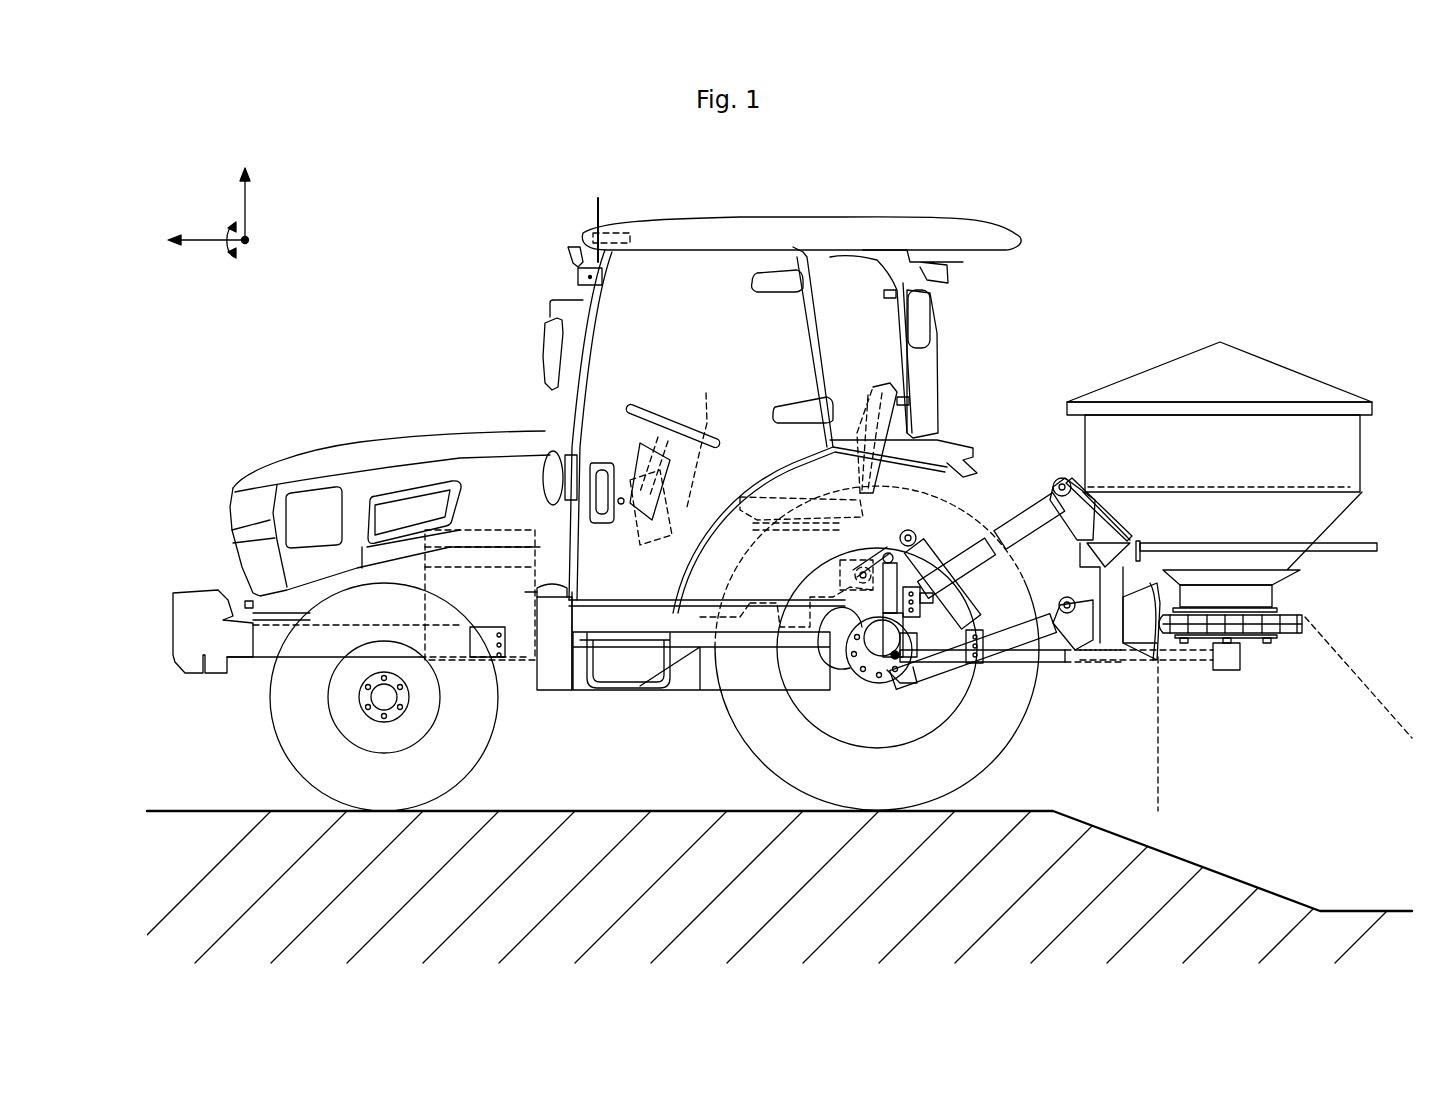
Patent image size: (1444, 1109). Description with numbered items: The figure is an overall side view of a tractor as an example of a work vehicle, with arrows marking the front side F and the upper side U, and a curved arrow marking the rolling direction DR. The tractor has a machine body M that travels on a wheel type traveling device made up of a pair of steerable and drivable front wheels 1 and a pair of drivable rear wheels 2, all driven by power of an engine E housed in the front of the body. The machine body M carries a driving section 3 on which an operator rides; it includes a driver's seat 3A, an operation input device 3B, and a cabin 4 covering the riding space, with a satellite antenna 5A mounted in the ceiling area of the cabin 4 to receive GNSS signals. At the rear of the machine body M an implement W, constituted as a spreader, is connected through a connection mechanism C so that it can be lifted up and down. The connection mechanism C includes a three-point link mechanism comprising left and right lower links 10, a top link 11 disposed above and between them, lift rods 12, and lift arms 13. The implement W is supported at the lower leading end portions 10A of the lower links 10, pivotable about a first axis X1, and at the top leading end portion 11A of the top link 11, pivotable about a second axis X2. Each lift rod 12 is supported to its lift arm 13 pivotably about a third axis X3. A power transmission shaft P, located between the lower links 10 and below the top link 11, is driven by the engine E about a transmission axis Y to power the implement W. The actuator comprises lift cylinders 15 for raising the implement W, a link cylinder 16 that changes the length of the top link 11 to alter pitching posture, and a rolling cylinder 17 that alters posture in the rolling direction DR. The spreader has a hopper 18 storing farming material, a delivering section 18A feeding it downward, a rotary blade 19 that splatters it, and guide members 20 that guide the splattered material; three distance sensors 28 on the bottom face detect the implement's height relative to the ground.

The front wheels 1 is at (280, 730).
The rear wheels 2 is at (742, 727).
The driving section 3 is at (889, 196).
The driver's seat 3A is at (880, 388).
The operation input device 3B is at (657, 410).
The cabin 4 is at (935, 352).
The satellite antenna 5A is at (592, 212).
The lower links 10 is at (940, 663).
The lower leading end portions 10A is at (1087, 632).
The top link 11 is at (1016, 511).
The top leading end portion 11A is at (1093, 505).
The lift rods 12 is at (897, 553).
The lift arms 13 is at (887, 548).
The lift cylinders 15 is at (855, 677).
The link cylinder 16 is at (975, 550).
The rolling cylinder 17 is at (918, 548).
The hopper 18 is at (1358, 455).
The delivering section 18A is at (1232, 590).
The rotary blade 19 is at (1283, 636).
The guide members 20 is at (1145, 657).
The distance sensors 28 is at (1267, 644).
The machine body M is at (376, 390).
The engine E is at (527, 523).
The implement W is at (1292, 318).
The connection mechanism C is at (996, 514).
The power transmission shaft P is at (1010, 662).
The transmission axis Y is at (1063, 637).
The first axis X1 is at (1080, 640).
The second axis X2 is at (1070, 485).
The third axis X3 is at (863, 577).
The upper side direction U is at (245, 192).
The front side direction F is at (197, 242).
The rolling direction DR is at (226, 258).